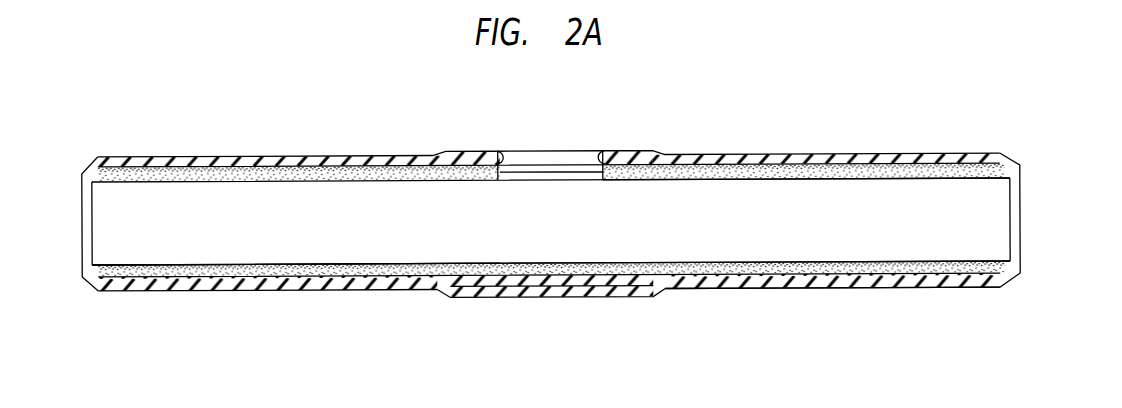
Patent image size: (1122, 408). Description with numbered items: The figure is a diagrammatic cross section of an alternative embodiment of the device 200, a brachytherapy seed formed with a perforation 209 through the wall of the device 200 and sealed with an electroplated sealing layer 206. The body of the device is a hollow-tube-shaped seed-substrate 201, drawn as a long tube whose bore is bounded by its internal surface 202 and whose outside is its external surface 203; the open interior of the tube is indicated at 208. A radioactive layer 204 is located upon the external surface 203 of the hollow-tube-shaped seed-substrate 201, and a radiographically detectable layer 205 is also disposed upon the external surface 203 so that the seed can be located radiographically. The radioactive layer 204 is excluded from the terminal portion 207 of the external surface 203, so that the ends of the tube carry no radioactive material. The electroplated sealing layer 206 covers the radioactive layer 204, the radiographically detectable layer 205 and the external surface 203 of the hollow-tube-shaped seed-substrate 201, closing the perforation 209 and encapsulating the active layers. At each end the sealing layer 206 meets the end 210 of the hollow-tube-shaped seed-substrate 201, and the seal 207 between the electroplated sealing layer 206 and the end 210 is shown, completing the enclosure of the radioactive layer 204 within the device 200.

The device 200 is at (578, 150).
The hollow-tube-shaped seed-substrate 201 is at (755, 289).
The internal surface 202 is at (838, 188).
The external surface 203 is at (703, 170).
The radioactive layer 204 is at (830, 165).
The radiographically detectable layer 205 is at (497, 264).
The electroplated sealing layer 206 is at (550, 297).
The terminal portion 207 is at (98, 152).
The lumen 208 is at (983, 225).
The perforation 209 is at (520, 138).
The end of the hollow-tube-shaped seed-substrate 210 is at (928, 181).